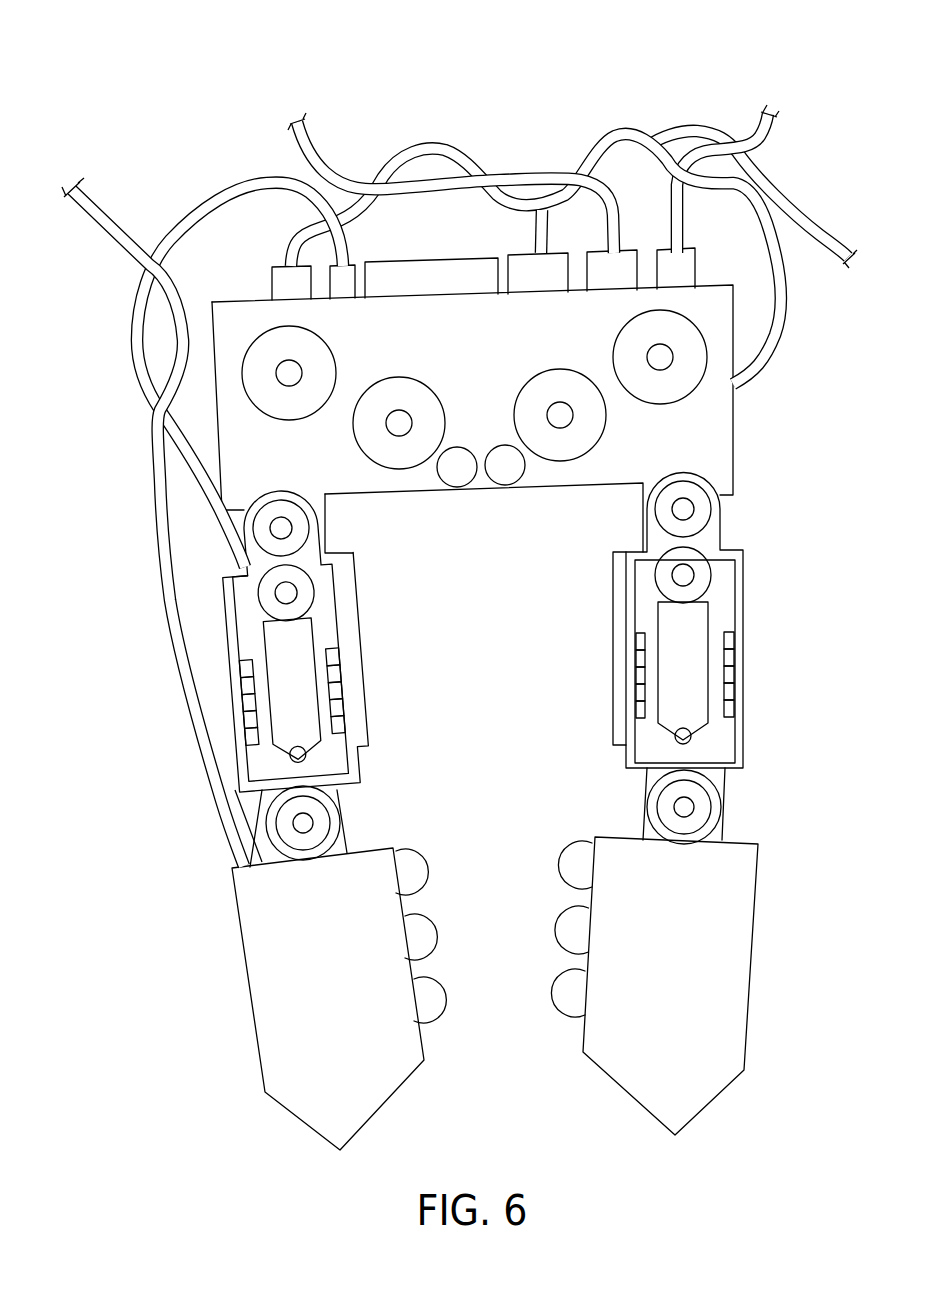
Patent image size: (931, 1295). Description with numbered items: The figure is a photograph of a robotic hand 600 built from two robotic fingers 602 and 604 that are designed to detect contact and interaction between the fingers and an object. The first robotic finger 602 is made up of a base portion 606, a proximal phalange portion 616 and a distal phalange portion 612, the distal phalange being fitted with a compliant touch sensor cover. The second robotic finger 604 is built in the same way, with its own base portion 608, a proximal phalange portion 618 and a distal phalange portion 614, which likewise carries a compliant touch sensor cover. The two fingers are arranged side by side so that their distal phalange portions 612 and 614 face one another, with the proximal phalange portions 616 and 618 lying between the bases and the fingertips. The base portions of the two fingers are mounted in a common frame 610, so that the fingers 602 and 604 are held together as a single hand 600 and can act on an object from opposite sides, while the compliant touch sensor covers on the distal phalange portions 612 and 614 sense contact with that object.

The robotic hand 600 is at (462, 588).
The robotic finger 602 is at (707, 804).
The robotic finger 604 is at (279, 818).
The base portion 606 is at (713, 432).
The base portion 608 is at (232, 422).
The common frame 610 is at (431, 261).
The distal phalange portion 612 is at (656, 999).
The distal phalange portion 614 is at (311, 1000).
The proximal phalange portion 616 is at (683, 682).
The proximal phalange portion 618 is at (267, 692).